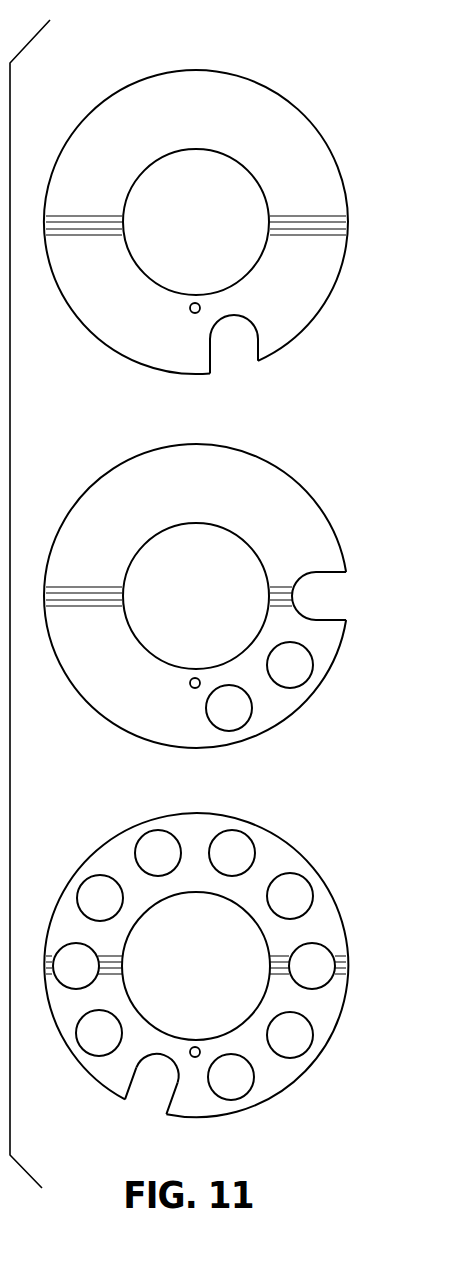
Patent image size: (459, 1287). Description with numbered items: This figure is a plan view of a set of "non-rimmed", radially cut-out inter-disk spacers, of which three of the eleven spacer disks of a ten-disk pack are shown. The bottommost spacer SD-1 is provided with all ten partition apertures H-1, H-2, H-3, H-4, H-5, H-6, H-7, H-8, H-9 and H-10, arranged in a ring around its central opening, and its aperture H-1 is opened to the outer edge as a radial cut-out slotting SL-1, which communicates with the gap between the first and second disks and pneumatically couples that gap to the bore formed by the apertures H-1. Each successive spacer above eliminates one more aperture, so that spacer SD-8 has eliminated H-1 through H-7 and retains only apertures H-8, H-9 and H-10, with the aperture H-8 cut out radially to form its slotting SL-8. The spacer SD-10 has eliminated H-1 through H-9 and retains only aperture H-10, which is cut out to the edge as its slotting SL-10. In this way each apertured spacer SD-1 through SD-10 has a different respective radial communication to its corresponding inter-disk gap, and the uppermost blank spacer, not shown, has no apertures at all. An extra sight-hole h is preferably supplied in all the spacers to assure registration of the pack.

The spacer disk SD-10 is at (245, 72).
The spacer disk SD-8 is at (258, 453).
The bottommost spacer disk SD-1 is at (262, 818).
The cut-out slotting SL-10 is at (238, 365).
The cut-out slotting SL-8 is at (341, 608).
The cut-out slotting SL-1 is at (143, 1102).
The partition aperture H-1 is at (157, 1071).
The partition aperture H-2 is at (99, 1033).
The partition aperture H-3 is at (76, 966).
The partition aperture H-4 is at (100, 898).
The partition aperture H-5 is at (158, 853).
The partition aperture H-6 is at (232, 853).
The partition aperture H-7 is at (290, 896).
The partition aperture H-8 is at (314, 780).
The partition aperture H-9 is at (290, 850).
The partition aperture H-10 is at (232, 707).
The sight-hole h is at (195, 1046).